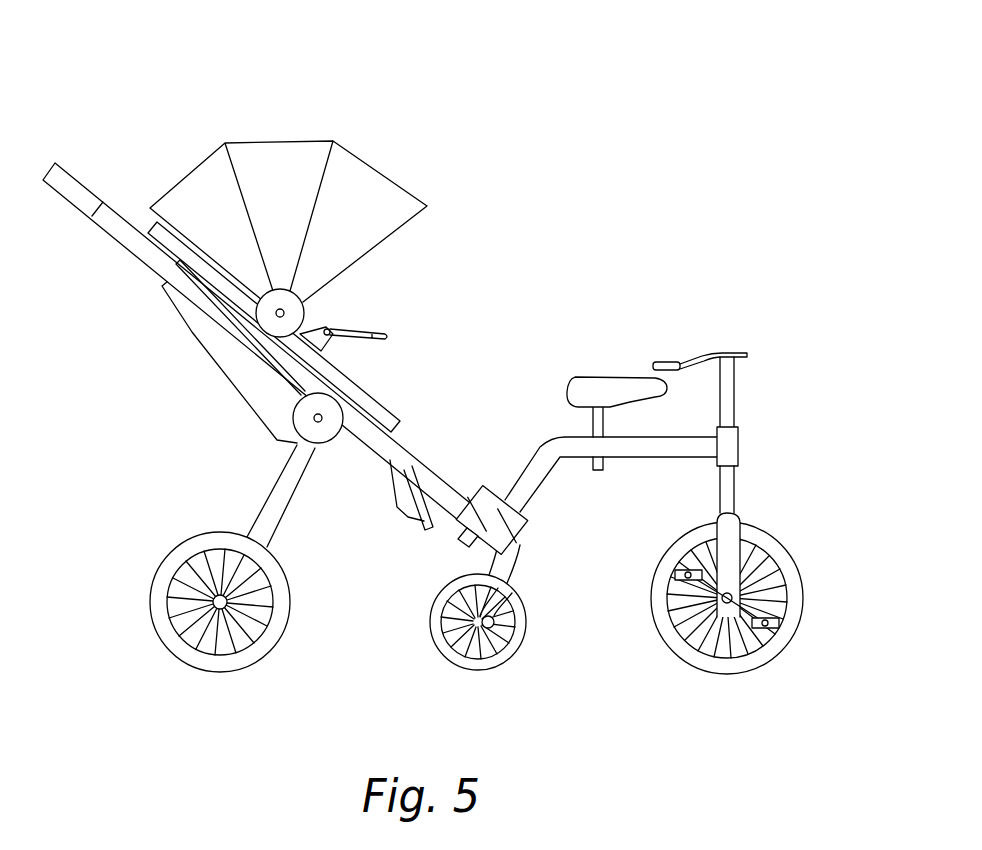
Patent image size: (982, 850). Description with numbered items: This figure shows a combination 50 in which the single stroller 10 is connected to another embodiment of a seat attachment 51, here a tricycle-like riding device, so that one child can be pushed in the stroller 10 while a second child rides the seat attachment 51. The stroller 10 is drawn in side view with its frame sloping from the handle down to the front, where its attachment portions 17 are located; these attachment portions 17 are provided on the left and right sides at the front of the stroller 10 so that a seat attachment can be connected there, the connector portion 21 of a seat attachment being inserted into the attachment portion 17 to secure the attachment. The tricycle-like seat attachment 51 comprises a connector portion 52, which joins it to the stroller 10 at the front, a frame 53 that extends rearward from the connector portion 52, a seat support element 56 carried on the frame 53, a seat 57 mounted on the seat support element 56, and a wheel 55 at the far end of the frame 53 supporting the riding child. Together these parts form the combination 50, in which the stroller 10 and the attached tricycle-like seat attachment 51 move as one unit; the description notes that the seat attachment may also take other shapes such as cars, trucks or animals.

The stroller 10 is at (267, 364).
The attachment portion 17 is at (455, 523).
The connector portion 21 is at (466, 546).
The combination 50 is at (611, 347).
The seat attachment 51 is at (656, 447).
The connector portion 52 is at (464, 500).
The frame 53 is at (660, 458).
The wheel 55 is at (768, 532).
The seat support element 56 is at (586, 425).
The seat 57 is at (587, 376).